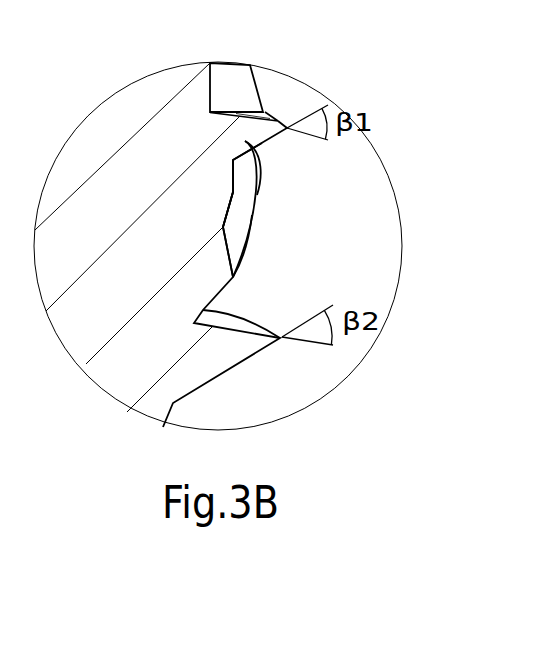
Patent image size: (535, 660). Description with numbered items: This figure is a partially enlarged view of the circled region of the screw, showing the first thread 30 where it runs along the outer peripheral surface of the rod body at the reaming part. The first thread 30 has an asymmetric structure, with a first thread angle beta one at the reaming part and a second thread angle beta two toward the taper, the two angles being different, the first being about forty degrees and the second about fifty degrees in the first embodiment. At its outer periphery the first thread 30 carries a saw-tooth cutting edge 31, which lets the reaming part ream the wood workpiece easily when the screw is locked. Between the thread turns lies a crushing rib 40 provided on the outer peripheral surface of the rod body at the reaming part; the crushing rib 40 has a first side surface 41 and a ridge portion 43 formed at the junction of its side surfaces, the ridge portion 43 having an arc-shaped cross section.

The first thread 30 is at (265, 110).
The saw-tooth cutting edge 31 is at (250, 142).
The crushing rib 40 is at (253, 232).
The first side surface 41 is at (245, 192).
The ridge portion 43 is at (241, 256).